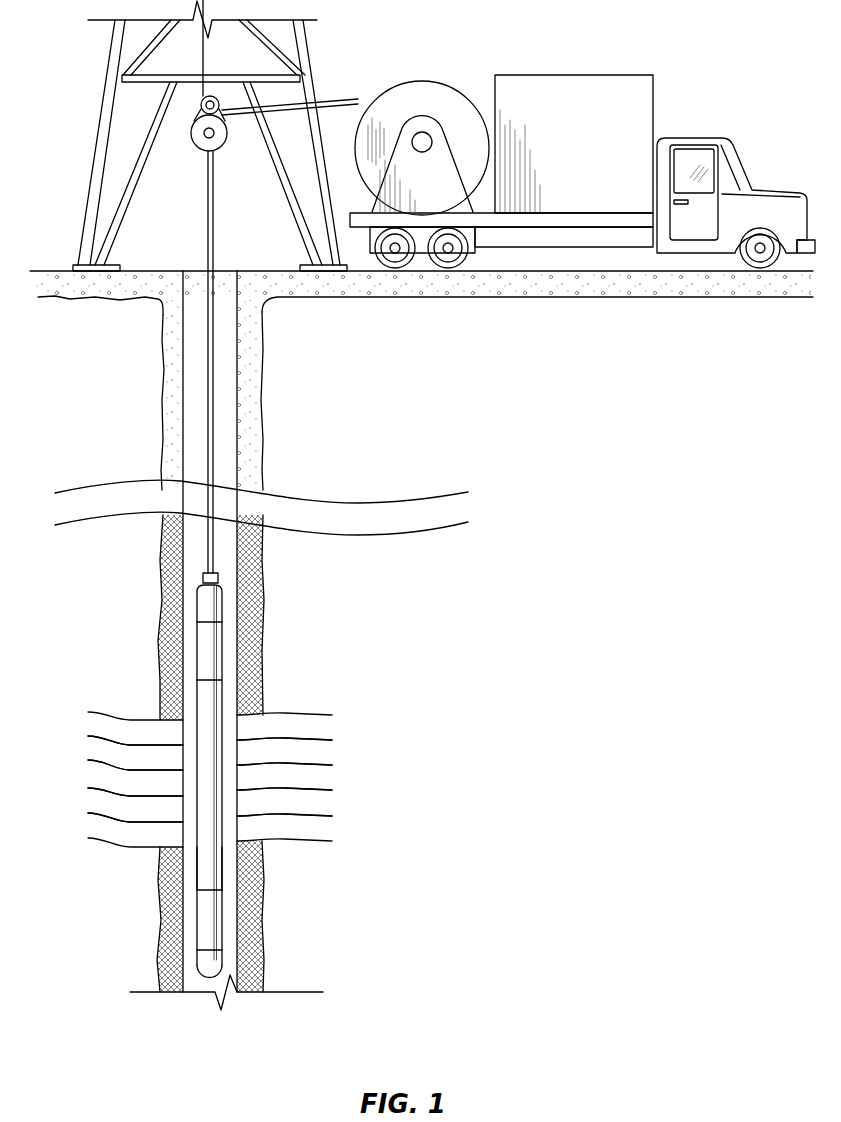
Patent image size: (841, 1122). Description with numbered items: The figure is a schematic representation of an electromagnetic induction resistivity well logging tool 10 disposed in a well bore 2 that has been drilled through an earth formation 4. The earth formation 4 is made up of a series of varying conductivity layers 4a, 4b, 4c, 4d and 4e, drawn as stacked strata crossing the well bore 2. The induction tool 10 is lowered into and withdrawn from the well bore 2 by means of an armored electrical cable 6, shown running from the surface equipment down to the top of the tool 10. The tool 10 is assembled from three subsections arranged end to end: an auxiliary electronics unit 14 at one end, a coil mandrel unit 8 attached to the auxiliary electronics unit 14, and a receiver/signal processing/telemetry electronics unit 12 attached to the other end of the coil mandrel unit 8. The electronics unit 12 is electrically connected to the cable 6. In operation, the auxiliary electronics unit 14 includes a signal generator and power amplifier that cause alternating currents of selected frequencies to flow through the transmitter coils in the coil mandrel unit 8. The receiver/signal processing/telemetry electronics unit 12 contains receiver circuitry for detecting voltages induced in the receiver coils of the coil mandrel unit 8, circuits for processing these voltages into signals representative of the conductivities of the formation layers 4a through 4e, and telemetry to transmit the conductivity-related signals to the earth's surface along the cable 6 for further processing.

The well bore 2 is at (227, 573).
The earth formation 4 is at (228, 775).
The varying conductivity layer 4a is at (323, 727).
The varying conductivity layer 4b is at (323, 755).
The varying conductivity layer 4c is at (323, 780).
The varying conductivity layer 4d is at (323, 805).
The varying conductivity layer 4e is at (323, 830).
The armored electrical cable 6 is at (207, 557).
The coil mandrel unit 8 is at (213, 873).
The electromagnetic induction resistivity well logging tool 10 is at (255, 779).
The receiver/signal processing/telemetry electronics unit 12 is at (222, 653).
The auxiliary electronics unit 14 is at (213, 917).